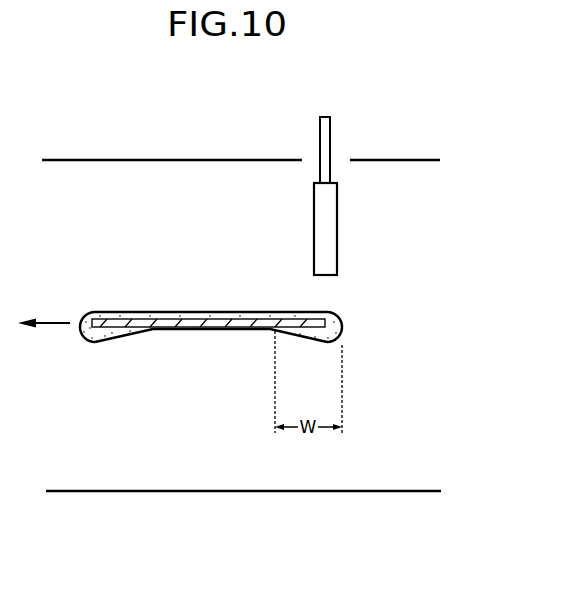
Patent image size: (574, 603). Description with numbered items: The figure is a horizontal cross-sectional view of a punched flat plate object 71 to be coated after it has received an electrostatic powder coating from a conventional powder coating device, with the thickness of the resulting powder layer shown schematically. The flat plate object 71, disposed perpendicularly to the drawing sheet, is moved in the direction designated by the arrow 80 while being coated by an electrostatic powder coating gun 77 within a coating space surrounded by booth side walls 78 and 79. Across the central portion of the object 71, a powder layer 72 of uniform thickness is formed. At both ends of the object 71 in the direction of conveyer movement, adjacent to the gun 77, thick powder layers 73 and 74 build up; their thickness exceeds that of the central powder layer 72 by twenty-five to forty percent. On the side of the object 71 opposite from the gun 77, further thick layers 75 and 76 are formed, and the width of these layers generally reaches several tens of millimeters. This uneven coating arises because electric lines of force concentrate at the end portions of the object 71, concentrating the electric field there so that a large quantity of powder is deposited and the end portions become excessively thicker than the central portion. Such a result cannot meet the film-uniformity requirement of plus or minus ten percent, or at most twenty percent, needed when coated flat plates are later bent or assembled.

The flat plate object to be coated 71 is at (188, 330).
The powder layer 72 is at (185, 312).
The thick powder layer 73 is at (322, 313).
The thick powder layer 74 is at (95, 310).
The thick layer 75 is at (315, 345).
The thick layer 76 is at (110, 342).
The electrostatic powder coating gun 77 is at (325, 233).
The booth side wall 78 is at (258, 160).
The booth side wall 79 is at (205, 492).
The arrow 80 is at (55, 323).